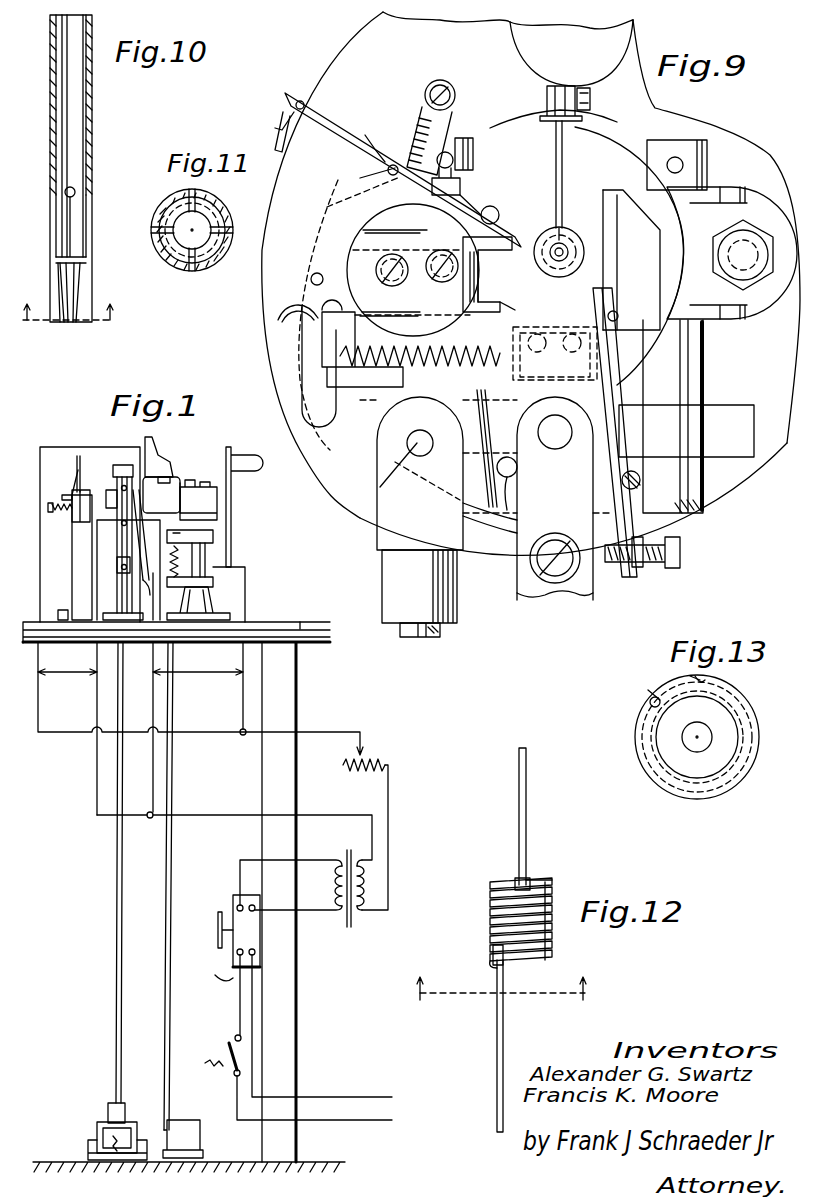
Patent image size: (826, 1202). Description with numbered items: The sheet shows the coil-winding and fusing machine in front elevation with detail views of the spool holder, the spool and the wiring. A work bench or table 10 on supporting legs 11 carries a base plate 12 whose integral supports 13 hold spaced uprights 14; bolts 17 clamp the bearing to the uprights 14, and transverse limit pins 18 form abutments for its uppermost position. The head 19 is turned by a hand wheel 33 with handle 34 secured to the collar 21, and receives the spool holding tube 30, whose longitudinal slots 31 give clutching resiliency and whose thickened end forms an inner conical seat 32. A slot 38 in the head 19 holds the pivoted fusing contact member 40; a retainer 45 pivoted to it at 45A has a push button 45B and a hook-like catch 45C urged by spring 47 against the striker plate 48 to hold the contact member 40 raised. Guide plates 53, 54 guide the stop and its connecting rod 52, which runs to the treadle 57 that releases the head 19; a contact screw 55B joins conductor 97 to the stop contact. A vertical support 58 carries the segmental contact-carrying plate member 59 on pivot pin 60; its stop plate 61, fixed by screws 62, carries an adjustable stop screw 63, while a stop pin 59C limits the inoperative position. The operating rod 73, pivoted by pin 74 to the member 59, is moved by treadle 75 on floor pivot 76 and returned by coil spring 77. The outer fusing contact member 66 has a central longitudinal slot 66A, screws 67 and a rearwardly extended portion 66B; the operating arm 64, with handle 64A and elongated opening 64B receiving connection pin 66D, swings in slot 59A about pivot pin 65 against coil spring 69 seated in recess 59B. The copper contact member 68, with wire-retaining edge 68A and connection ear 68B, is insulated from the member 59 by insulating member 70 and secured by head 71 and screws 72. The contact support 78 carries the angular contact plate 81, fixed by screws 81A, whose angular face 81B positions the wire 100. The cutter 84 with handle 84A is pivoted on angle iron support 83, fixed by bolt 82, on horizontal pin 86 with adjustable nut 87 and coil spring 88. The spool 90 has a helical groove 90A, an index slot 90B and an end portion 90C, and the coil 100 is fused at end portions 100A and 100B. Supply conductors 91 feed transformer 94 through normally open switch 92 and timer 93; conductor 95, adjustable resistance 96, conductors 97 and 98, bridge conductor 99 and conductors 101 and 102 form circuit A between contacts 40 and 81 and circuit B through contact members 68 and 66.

In FIG. 1, the work bench or table 10 is at (305, 635).
In FIG. 10, the supporting legs 11 is at (79, 325).
In FIG. 1, the supporting legs 11 is at (290, 667).
In FIG. 1, the base plate 12 is at (288, 622).
In FIG. 1, the integral supports 13 is at (205, 605).
In FIG. 12, the integral supports 13 is at (501, 998).
In FIG. 9, the uprights 14 is at (708, 150).
In FIG. 9, the bolts 17 is at (740, 278).
In FIG. 9, the transverse limit pin 18 is at (684, 164).
In FIG. 9, the head 19 is at (623, 160).
In FIG. 1, the head 19 is at (176, 482).
In FIG. 1, the collar 21 is at (218, 493).
In FIG. 10, the spool holding sleeve or tube 30 is at (92, 110).
In FIG. 11, the spool holding sleeve or tube 30 is at (214, 194).
In FIG. 10, the longitudinal slots 31 is at (52, 240).
In FIG. 11, the longitudinal slots 31 is at (190, 195).
In FIG. 10, the inner conical seat 32 is at (76, 295).
In FIG. 11, the inner conical seat 32 is at (206, 248).
In FIG. 9, the hand wheel 33 is at (720, 128).
In FIG. 1, the hand wheel 33 is at (213, 538).
In FIG. 1, the handle 34 is at (245, 462).
In FIG. 9, the slot 38 is at (556, 148).
In FIG. 9, the fusing contact member 40 is at (562, 178).
In FIG. 1, the retainer 45 is at (150, 442).
In FIG. 9, the pivotal connection 45A is at (590, 92).
In FIG. 9, the push button 45B is at (600, 50).
In FIG. 1, the hook-like catch 45C is at (166, 478).
In FIG. 9, the spring 47 is at (585, 116).
In FIG. 9, the striker plate 48 is at (612, 134).
In FIG. 1, the connecting rod 52 is at (172, 858).
In FIG. 9, the guide plate 53 is at (744, 412).
In FIG. 1, the guide plate 53 is at (208, 536).
In FIG. 1, the guide plate 54 is at (212, 586).
In FIG. 1, the contact screw 55B is at (182, 558).
In FIG. 1, the treadle 57 is at (185, 1130).
In FIG. 9, the vertical support 58 is at (580, 595).
In FIG. 1, the vertical support 58 is at (120, 548).
In FIG. 9, the contact-carrying plate member 59 is at (345, 195).
In FIG. 9, the angularly shaped open slot 59A is at (300, 255).
In FIG. 9, the recess or bore 59B is at (485, 372).
In FIG. 9, the stop pin 59C is at (505, 512).
In FIG. 9, the pivot pin 60 is at (565, 436).
In FIG. 9, the stop plate 61 is at (632, 580).
In FIG. 9, the screws 62 is at (614, 324).
In FIG. 9, the adjustable stop screw 63 is at (682, 559).
In FIG. 9, the operating arm 64 is at (440, 118).
In FIG. 9, the handle 64A is at (425, 92).
In FIG. 1, the handle 64A is at (118, 462).
In FIG. 9, the elongated opening 64B is at (360, 178).
In FIG. 9, the pivot pin 65 is at (312, 284).
In FIG. 9, the outer fusing contact member 66 is at (365, 135).
In FIG. 9, the central longitudinal slot 66A is at (455, 170).
In FIG. 9, the rearwardly extended portion 66B is at (296, 104).
In FIG. 9, the connection pin 66D is at (393, 165).
In FIG. 9, the screws 67 is at (463, 190).
In FIG. 9, the copper contact member 68 is at (496, 278).
In FIG. 9, the wire-retaining edge 68A is at (490, 262).
In FIG. 9, the connection ear 68B is at (322, 345).
In FIG. 9, the coil spring 69 is at (422, 370).
In FIG. 9, the insulating member 70 is at (518, 304).
In FIG. 9, the head 71 is at (350, 240).
In FIG. 1, the head 71 is at (116, 480).
In FIG. 9, the screws 72 is at (393, 287).
In FIG. 9, the vertical operating rod 73 is at (412, 640).
In FIG. 1, the vertical operating rod 73 is at (117, 862).
In FIG. 9, the pin 74 is at (377, 485).
In FIG. 1, the treadle 75 is at (105, 1112).
In FIG. 1, the floor pivot 76 is at (97, 1130).
In FIG. 1, the coil spring 77 is at (122, 1130).
In FIG. 9, the electrical contact support 78 is at (480, 408).
In FIG. 1, the electrical contact support 78 is at (143, 580).
In FIG. 9, the angular contact plate 81 is at (640, 215).
In FIG. 1, the angular contact plate 81 is at (140, 520).
In FIG. 9, the screws 81A is at (528, 360).
In FIG. 9, the angular face 81B is at (605, 215).
In FIG. 1, the bolt 82 is at (62, 612).
In FIG. 1, the angle iron support 83 is at (80, 582).
In FIG. 1, the cutter 84 is at (74, 520).
In FIG. 1, the handle 84A is at (80, 458).
In FIG. 1, the horizontal pin 86 is at (50, 507).
In FIG. 1, the adjustable nut 87 is at (55, 512).
In FIG. 1, the coil spring 88 is at (66, 494).
In FIG. 9, the spool or core 90 is at (568, 228).
In FIG. 12, the spool or core 90 is at (552, 880).
In FIG. 13, the spool or core 90 is at (660, 785).
In FIG. 12, the helical groove or thread 90A is at (552, 937).
In FIG. 12, the index slot 90B is at (527, 872).
In FIG. 13, the index slot 90B is at (694, 690).
In FIG. 12, the coil end 90C is at (497, 965).
In FIG. 13, the coil end 90C is at (654, 692).
In FIG. 1, the current source supply conductors 91 is at (392, 1120).
In FIG. 1, the normally open switch 92 is at (230, 1052).
In FIG. 1, the adjustable automatic timer 93 is at (262, 936).
In FIG. 1, the transformer 94 is at (372, 873).
In FIG. 1, the conductor 95 is at (388, 797).
In FIG. 1, the adjustable resistance 96 is at (358, 765).
In FIG. 1, the conductor 97 is at (245, 567).
In FIG. 1, the conductor 98 is at (155, 716).
In FIG. 1, the bridge conductor 99 is at (172, 510).
In FIG. 12, the coiled wire 100 is at (526, 798).
In FIG. 13, the coiled wire 100 is at (705, 680).
In FIG. 12, the secured end portion of coil 100A is at (517, 880).
In FIG. 12, the other end portion of coil 100B is at (492, 950).
In FIG. 13, the other end portion of coil 100B is at (650, 702).
In FIG. 9, the conductor 101 is at (283, 318).
In FIG. 1, the conductor 101 is at (92, 712).
In FIG. 9, the conductor 102 is at (285, 128).
In FIG. 1, the conductor 102 is at (97, 440).
In FIG. 1, the electrical circuit A is at (198, 665).
In FIG. 1, the circuit B is at (67, 665).